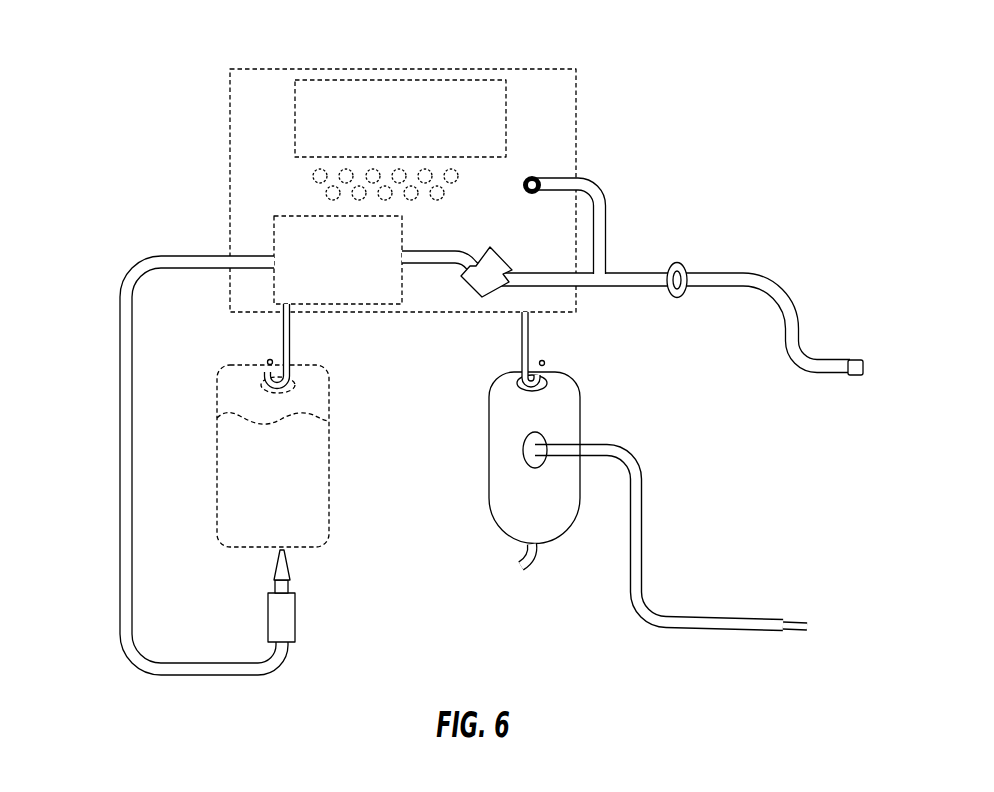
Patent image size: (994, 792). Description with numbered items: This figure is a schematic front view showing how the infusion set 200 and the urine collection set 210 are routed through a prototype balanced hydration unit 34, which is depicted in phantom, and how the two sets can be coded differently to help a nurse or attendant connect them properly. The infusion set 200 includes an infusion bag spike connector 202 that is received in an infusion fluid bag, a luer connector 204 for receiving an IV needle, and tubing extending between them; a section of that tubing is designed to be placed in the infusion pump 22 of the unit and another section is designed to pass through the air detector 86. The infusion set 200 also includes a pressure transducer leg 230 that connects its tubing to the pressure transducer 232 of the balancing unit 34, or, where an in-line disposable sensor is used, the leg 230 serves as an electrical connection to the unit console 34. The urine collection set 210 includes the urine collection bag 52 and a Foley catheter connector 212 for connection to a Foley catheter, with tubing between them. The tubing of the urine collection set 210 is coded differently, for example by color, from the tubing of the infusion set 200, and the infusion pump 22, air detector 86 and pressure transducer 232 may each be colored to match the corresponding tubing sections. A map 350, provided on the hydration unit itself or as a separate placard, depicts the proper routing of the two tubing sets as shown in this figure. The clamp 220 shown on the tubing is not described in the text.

The balanced hydration unit 34 is at (403, 162).
The infusion pump 22 is at (338, 260).
The air detector 86 is at (486, 272).
The pressure transducer 232 is at (538, 158).
The pressure transducer leg 230 is at (597, 225).
The clamp 220 is at (689, 251).
The luer connector 204 is at (869, 392).
The infusion set 200 is at (156, 465).
The infusion bag spike connector 202 is at (319, 596).
The urine collection bag 52 is at (518, 464).
The urine collection set 210 is at (659, 537).
The Foley catheter connector 212 is at (800, 656).
The map 350 is at (626, 211).